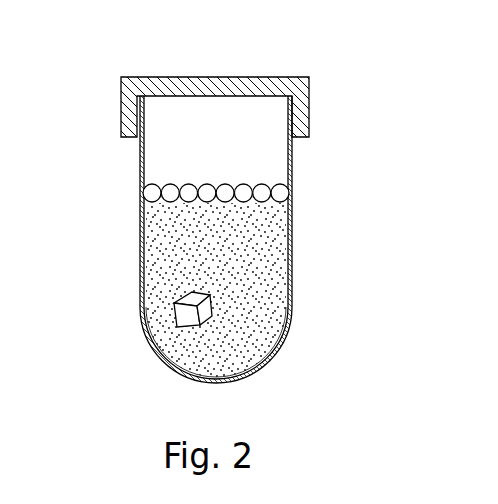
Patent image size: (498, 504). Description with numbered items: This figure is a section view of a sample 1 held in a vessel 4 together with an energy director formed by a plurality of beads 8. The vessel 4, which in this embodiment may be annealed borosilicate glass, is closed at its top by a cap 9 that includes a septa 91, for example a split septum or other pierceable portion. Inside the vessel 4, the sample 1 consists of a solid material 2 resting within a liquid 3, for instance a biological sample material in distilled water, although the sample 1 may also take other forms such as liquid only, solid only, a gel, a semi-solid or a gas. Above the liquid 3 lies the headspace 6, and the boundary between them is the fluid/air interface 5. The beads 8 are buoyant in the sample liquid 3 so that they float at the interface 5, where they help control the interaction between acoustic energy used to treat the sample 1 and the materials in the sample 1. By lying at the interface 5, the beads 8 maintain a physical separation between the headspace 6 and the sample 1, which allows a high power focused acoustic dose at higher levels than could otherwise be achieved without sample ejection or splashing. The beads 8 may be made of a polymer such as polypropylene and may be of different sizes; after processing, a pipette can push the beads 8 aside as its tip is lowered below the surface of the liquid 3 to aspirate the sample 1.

The sample 1 is at (278, 282).
The solid material 2 is at (178, 320).
The liquid 3 is at (267, 331).
The vessel 4 is at (140, 155).
The interface 5 is at (162, 219).
The headspace 6 is at (272, 137).
The beads 8 is at (258, 193).
The cap 9 is at (309, 88).
The septa 91 is at (245, 77).